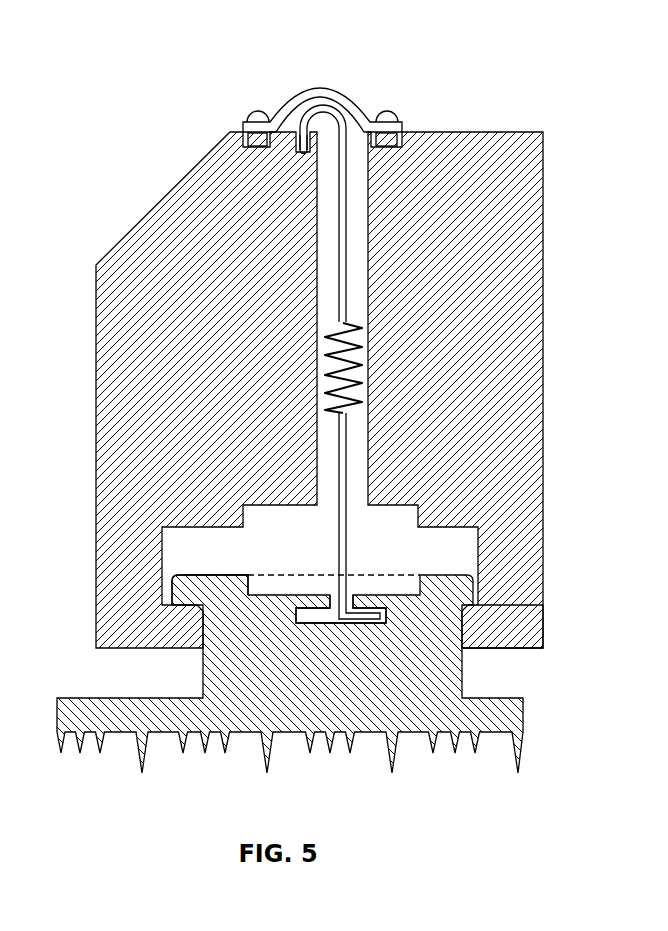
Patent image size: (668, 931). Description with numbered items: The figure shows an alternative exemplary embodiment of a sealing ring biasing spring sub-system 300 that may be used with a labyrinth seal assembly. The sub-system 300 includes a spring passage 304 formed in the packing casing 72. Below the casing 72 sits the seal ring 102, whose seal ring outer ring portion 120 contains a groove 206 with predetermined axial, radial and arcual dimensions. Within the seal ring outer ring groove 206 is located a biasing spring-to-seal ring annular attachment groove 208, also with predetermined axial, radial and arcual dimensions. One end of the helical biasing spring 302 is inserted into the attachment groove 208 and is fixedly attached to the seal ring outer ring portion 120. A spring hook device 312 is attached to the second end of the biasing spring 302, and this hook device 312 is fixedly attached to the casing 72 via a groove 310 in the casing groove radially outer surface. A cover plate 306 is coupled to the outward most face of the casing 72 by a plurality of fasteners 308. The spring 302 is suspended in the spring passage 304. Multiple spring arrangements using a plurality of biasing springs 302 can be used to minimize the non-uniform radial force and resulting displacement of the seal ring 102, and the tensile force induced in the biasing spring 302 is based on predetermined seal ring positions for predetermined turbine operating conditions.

The sealing ring biasing spring sub-system 300 is at (108, 82).
The packing casing 72 is at (540, 222).
The seal ring outer ring portion 120 is at (477, 590).
The seal ring 102 is at (378, 720).
The groove 206 is at (270, 590).
The biasing spring-to-seal ring annular attachment groove 208 is at (327, 622).
The cover plate 306 is at (333, 88).
The fasteners 308 is at (384, 110).
The spring hook device 312 is at (320, 105).
The groove 310 is at (300, 153).
The spring passage 304 is at (358, 256).
The helical biasing spring 302 is at (360, 356).